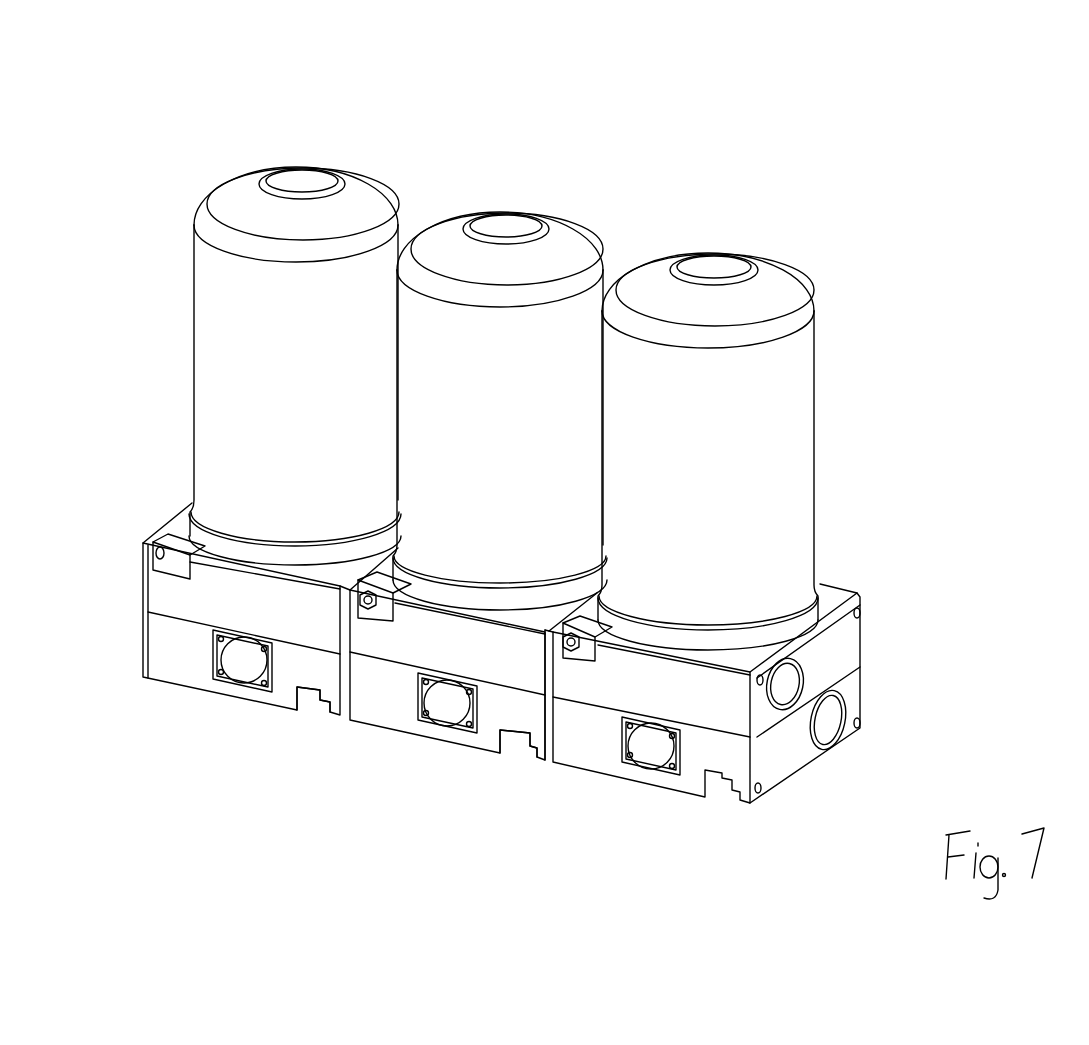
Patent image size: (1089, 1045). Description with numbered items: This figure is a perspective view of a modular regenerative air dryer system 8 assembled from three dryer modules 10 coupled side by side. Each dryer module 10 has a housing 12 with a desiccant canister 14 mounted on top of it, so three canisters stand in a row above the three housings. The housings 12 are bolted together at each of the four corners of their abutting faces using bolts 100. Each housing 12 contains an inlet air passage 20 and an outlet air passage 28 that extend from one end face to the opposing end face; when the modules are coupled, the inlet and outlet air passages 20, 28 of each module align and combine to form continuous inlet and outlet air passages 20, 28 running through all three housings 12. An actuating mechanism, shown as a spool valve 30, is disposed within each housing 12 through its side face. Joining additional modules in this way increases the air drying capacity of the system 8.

The modular regenerative air dryer system 8 is at (878, 100).
The dryer module 10 is at (100, 307).
The housing 12 is at (140, 586).
The desiccant canister 14 is at (193, 413).
The inlet air passage 20 is at (830, 720).
The outlet air passage 28 is at (785, 690).
The spool valve 30 is at (245, 672).
The bolts 100 is at (320, 702).